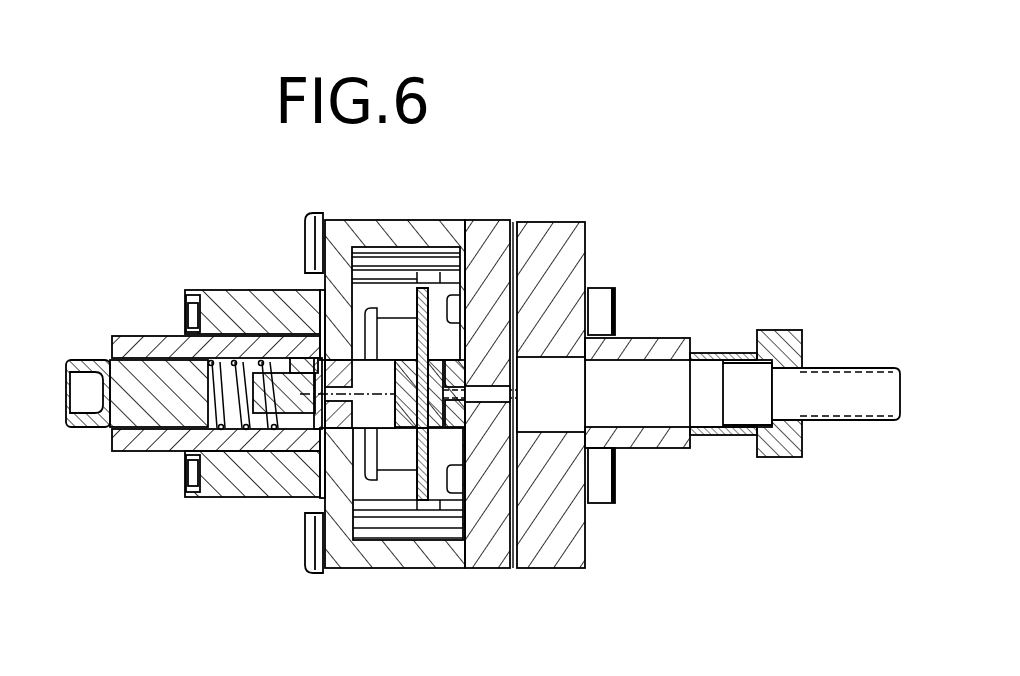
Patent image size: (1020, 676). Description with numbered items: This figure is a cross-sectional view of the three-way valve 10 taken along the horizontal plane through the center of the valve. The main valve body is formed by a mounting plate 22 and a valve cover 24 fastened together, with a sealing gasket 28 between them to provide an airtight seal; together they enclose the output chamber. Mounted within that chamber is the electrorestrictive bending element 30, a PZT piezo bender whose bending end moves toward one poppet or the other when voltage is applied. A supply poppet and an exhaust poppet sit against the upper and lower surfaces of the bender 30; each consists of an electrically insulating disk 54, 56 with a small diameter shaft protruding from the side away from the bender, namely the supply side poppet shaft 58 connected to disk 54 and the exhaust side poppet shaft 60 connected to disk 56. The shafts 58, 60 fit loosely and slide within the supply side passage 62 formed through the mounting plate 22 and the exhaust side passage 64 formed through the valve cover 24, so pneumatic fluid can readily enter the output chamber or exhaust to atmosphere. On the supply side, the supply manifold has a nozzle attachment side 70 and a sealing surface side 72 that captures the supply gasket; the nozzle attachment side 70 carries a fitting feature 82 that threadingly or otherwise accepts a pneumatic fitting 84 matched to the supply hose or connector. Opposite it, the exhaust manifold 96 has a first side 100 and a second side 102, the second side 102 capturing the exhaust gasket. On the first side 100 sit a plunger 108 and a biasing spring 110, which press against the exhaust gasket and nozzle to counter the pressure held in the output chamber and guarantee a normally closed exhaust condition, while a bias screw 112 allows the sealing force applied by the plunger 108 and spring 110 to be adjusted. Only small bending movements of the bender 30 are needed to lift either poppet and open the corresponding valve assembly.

The three-way valve 10 is at (228, 183).
The mounting plate 22 is at (503, 560).
The valve cover 24 is at (352, 568).
The sealing gasket 28 is at (468, 565).
The electrorestrictive bending element 30 is at (452, 358).
The electrically insulating disk 54 is at (388, 420).
The electrically insulating disk 56 is at (445, 358).
The supply side poppet shaft 58 is at (592, 357).
The exhaust side poppet shaft 60 is at (326, 300).
The supply side passage 62 is at (522, 352).
The exhaust side passage 64 is at (391, 450).
The nozzle attachment side 70 is at (587, 520).
The sealing surface side 72 is at (703, 352).
The fitting feature 82 is at (712, 440).
The pneumatic fitting 84 is at (872, 425).
The exhaust manifold 96 is at (148, 449).
The first side 100 is at (180, 300).
The second side 102 is at (318, 293).
The plunger 108 is at (300, 440).
The biasing spring 110 is at (250, 440).
The bias screw 112 is at (95, 418).